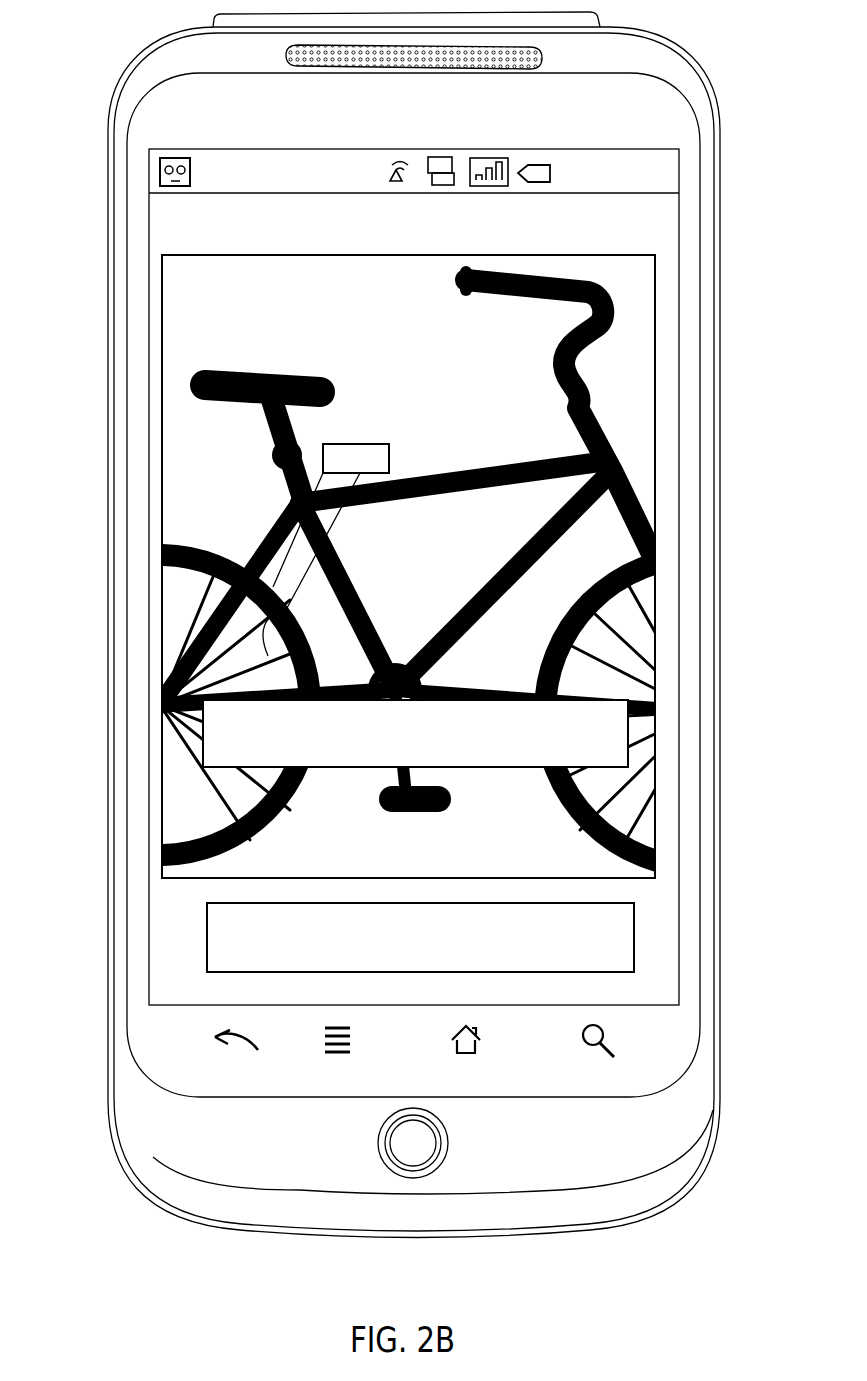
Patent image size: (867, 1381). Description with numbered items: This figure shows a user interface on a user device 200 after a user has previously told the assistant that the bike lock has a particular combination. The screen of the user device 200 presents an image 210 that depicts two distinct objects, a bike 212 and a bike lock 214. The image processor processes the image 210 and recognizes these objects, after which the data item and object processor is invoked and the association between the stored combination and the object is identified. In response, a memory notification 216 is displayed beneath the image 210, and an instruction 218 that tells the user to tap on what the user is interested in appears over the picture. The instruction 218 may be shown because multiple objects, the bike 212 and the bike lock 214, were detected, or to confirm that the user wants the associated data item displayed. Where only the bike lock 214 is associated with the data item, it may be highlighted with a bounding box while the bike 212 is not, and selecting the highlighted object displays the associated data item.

The user device 200 is at (694, 60).
The image 210 is at (647, 255).
The bike 212 is at (607, 430).
The bike lock 214 is at (370, 444).
The memory notification 216 is at (207, 945).
The instruction 218 is at (203, 725).